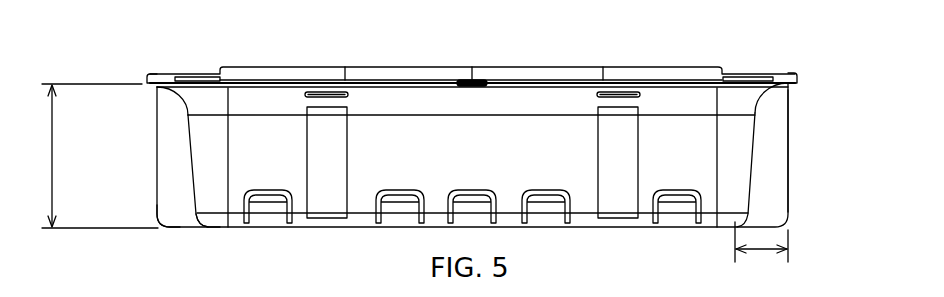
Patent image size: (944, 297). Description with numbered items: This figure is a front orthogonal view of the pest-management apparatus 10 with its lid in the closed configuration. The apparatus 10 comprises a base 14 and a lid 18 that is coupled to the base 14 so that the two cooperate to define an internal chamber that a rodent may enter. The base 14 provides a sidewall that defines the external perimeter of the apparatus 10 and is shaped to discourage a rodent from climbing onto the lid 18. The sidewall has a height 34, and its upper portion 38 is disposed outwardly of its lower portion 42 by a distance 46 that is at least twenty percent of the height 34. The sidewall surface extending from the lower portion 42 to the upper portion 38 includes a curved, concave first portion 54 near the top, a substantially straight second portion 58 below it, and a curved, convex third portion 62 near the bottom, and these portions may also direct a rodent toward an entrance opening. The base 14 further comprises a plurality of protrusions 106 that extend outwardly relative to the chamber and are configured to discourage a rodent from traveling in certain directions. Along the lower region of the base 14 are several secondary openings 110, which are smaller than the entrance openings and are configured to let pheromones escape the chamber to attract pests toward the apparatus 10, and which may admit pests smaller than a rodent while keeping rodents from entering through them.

The pest-management apparatus 10 is at (160, 31).
The base 14 is at (378, 170).
The lid 18 is at (683, 67).
The height 34 is at (52, 170).
The upper portion 38 is at (157, 88).
The lower portion 42 is at (206, 227).
The distance 46 is at (762, 255).
The first portion 54 is at (177, 98).
The second portion 58 is at (190, 150).
The third portion 62 is at (197, 225).
The protrusions 106 is at (781, 163).
The secondary openings 110 is at (266, 208).